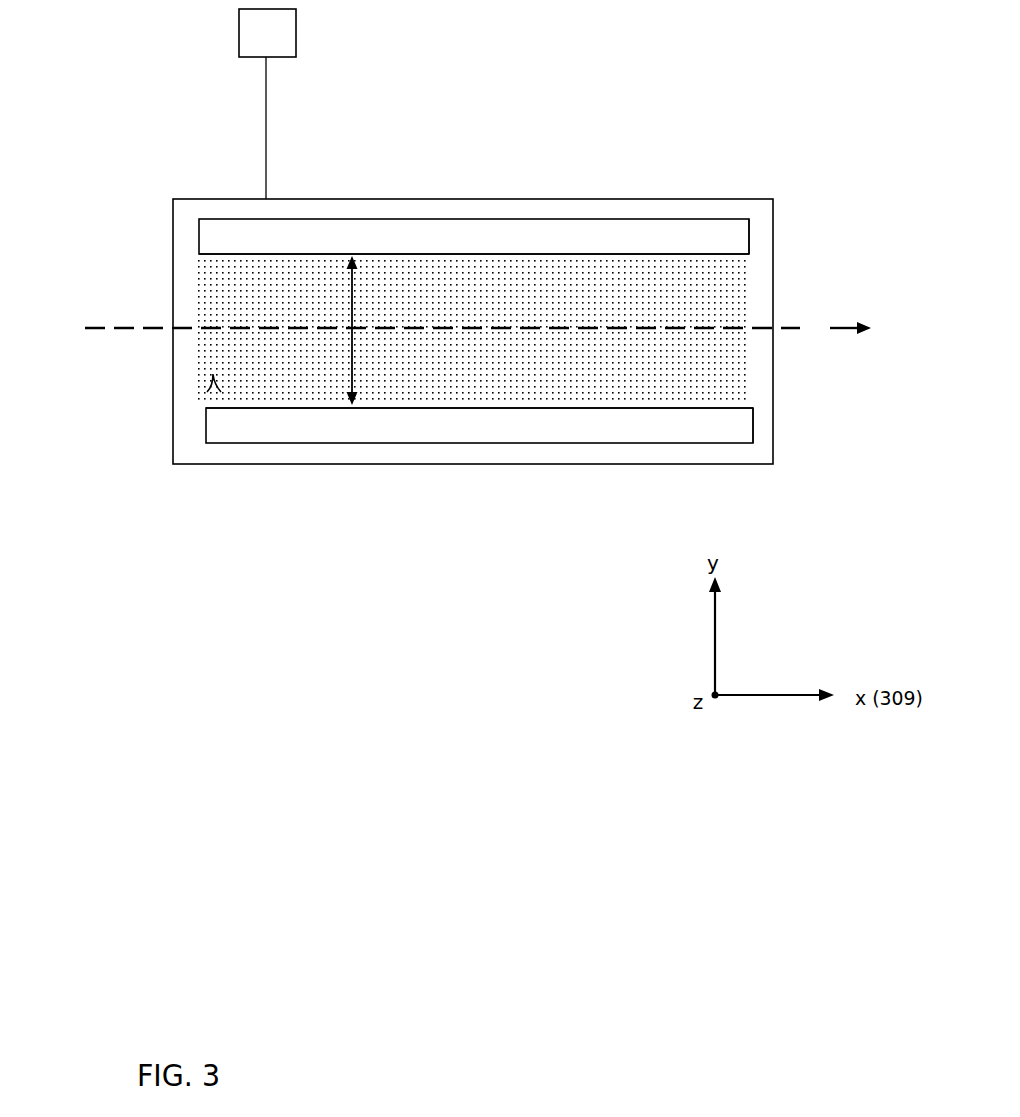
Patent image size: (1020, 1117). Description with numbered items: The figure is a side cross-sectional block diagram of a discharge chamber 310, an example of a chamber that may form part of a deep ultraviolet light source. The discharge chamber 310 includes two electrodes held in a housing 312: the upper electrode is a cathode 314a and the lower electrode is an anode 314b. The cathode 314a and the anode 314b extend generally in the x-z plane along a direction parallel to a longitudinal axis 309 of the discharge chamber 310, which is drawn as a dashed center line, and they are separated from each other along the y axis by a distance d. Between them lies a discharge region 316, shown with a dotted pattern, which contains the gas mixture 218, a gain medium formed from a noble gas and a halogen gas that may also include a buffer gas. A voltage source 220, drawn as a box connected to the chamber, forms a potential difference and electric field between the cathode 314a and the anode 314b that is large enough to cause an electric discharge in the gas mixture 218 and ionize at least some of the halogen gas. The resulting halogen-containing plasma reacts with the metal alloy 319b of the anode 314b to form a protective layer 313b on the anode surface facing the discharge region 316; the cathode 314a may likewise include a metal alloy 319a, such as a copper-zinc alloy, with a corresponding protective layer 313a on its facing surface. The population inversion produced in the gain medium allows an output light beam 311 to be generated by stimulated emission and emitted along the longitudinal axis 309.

The voltage source 220 is at (267, 104).
The discharge chamber 310 is at (586, 112).
The housing 312 is at (670, 195).
The cathode 314a is at (474, 236).
The anode 314b is at (479, 425).
The discharge region 316 is at (238, 300).
The protective layer 313a is at (515, 253).
The protective layer 313b is at (612, 406).
The metal alloy 319a is at (732, 238).
The metal alloy 319b is at (744, 432).
The longitudinal axis 309 is at (133, 329).
The output light beam 311 is at (842, 330).
The gas mixture 218 is at (207, 392).